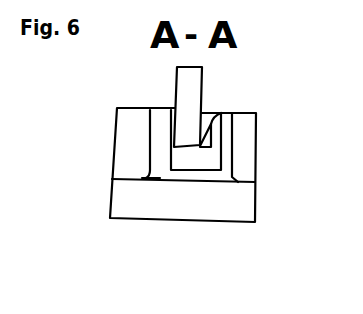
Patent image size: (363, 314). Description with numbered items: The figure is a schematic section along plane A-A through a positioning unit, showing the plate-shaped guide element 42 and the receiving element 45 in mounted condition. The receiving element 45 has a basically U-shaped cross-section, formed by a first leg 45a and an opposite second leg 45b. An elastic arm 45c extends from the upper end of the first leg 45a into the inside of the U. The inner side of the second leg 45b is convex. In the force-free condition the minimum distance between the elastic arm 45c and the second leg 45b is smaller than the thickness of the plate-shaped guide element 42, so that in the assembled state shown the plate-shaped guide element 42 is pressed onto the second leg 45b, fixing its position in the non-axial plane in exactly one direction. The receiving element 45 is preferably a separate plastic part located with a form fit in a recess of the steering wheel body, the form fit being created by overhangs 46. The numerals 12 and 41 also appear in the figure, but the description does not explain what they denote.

The housing body 12 is at (250, 140).
The base part 41 is at (238, 182).
The plate-shaped guide element 42 is at (182, 143).
The receiving element 45 is at (203, 175).
The first leg 45a is at (229, 133).
The second leg 45b is at (158, 145).
The elastic arm 45c is at (208, 132).
The overhangs 46 is at (150, 179).